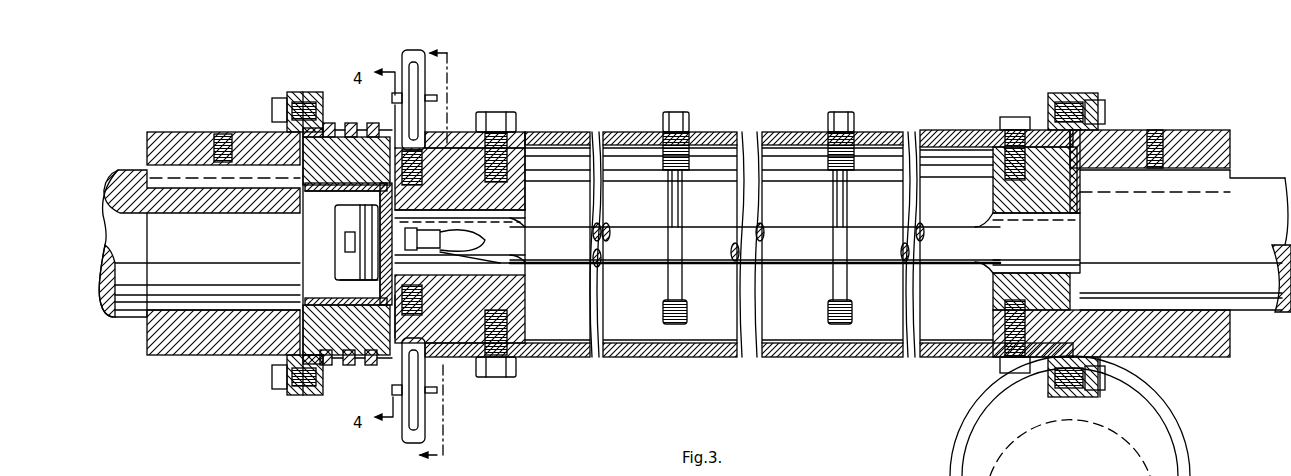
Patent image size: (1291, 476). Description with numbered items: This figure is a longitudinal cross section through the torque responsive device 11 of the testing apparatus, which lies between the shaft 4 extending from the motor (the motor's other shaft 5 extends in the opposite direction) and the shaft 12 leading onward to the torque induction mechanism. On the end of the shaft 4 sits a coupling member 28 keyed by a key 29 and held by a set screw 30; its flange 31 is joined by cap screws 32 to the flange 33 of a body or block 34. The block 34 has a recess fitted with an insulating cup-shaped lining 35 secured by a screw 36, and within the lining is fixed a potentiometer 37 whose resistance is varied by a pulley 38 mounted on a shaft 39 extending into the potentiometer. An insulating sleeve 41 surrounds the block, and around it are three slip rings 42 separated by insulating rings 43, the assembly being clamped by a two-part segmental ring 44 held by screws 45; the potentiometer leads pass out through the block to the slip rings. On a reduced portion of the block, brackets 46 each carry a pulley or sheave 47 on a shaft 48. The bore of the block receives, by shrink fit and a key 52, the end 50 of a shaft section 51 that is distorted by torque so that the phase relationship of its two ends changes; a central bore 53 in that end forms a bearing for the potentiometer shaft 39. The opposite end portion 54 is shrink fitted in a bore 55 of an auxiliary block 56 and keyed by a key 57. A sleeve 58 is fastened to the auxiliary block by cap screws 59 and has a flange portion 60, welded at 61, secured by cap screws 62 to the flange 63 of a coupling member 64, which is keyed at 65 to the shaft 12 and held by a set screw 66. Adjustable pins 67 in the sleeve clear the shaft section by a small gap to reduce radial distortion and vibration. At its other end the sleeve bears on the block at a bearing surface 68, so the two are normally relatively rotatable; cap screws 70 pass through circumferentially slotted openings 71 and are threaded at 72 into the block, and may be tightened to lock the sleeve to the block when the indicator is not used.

The shaft 4 is at (130, 296).
The shaft 5 is at (433, 256).
The torque responsive device 11 is at (818, 358).
The shaft 12 is at (1255, 265).
The coupling member 28 is at (212, 343).
The key 29 is at (197, 176).
The set screw 30 is at (222, 132).
The flange 31 is at (290, 386).
The cap screws 32 is at (272, 378).
The flange 33 is at (313, 390).
The body or block 34 is at (336, 150).
The cup-shaped lining 35 is at (330, 298).
The screw 36 is at (305, 203).
The potentiometer 37 is at (345, 222).
The pulley 38 is at (460, 236).
The shaft 39 is at (520, 278).
The insulating sleeve 41 is at (330, 366).
The slip rings 42 is at (345, 366).
The insulating rings 43 is at (372, 366).
The segmental ring 44 is at (398, 128).
The screws 45 is at (397, 140).
The brackets 46 is at (432, 150).
The pulley or sheave 47 is at (415, 82).
The shaft 48 is at (433, 98).
The end of shaft section 50 is at (513, 238).
The shaft section 51 is at (652, 250).
The key 52 is at (520, 222).
The central bore 53 is at (528, 264).
The end portion 54 is at (1005, 252).
The bore 55 is at (1082, 262).
The auxiliary block 56 is at (995, 306).
The key 57 is at (998, 218).
The sleeve 58 is at (880, 132).
The cap screws 59 is at (1018, 118).
The flange portion 60 is at (1066, 397).
The weld 61 is at (1050, 358).
The cap screws 62 is at (1103, 380).
The flange 63 is at (1084, 397).
The coupling member 64 is at (1180, 346).
The key 65 is at (1108, 170).
The set screw 66 is at (1163, 133).
The pins 67 is at (682, 208).
The bearing surface 68 is at (450, 352).
The cap screws 70 is at (500, 372).
The slotted openings 71 is at (540, 352).
The threaded connection 72 is at (515, 322).